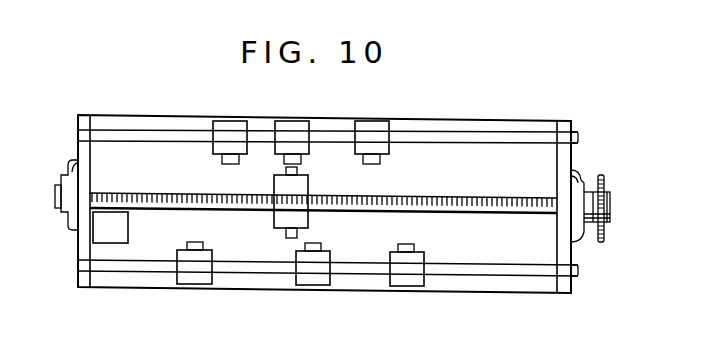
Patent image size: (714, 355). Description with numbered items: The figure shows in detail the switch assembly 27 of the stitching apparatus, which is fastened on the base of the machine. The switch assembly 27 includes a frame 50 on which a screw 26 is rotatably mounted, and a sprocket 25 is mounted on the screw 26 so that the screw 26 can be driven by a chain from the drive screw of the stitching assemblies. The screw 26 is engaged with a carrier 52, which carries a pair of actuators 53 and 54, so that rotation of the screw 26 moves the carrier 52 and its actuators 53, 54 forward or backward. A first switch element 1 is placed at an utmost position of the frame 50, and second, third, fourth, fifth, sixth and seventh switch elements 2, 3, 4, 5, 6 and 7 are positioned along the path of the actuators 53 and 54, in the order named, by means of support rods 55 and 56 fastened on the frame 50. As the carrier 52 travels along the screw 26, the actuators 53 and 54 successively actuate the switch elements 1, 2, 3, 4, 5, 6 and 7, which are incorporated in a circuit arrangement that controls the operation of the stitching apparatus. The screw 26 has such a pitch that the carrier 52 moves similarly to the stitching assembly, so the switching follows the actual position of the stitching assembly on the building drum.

The switch assembly 27 is at (467, 112).
The screw 26 is at (519, 197).
The sprocket 25 is at (601, 178).
The frame 50 is at (565, 252).
The carrier 52 is at (309, 215).
The actuator 53 is at (284, 234).
The actuator 54 is at (285, 170).
The support rod 55 is at (490, 264).
The support rod 56 is at (457, 143).
The first switch element 1 is at (110, 227).
The second switch element 2 is at (194, 263).
The third switch element 3 is at (230, 142).
The fourth switch element 4 is at (292, 142).
The fifth switch element 5 is at (313, 264).
The sixth switch element 6 is at (372, 142).
The seventh switch element 7 is at (407, 265).